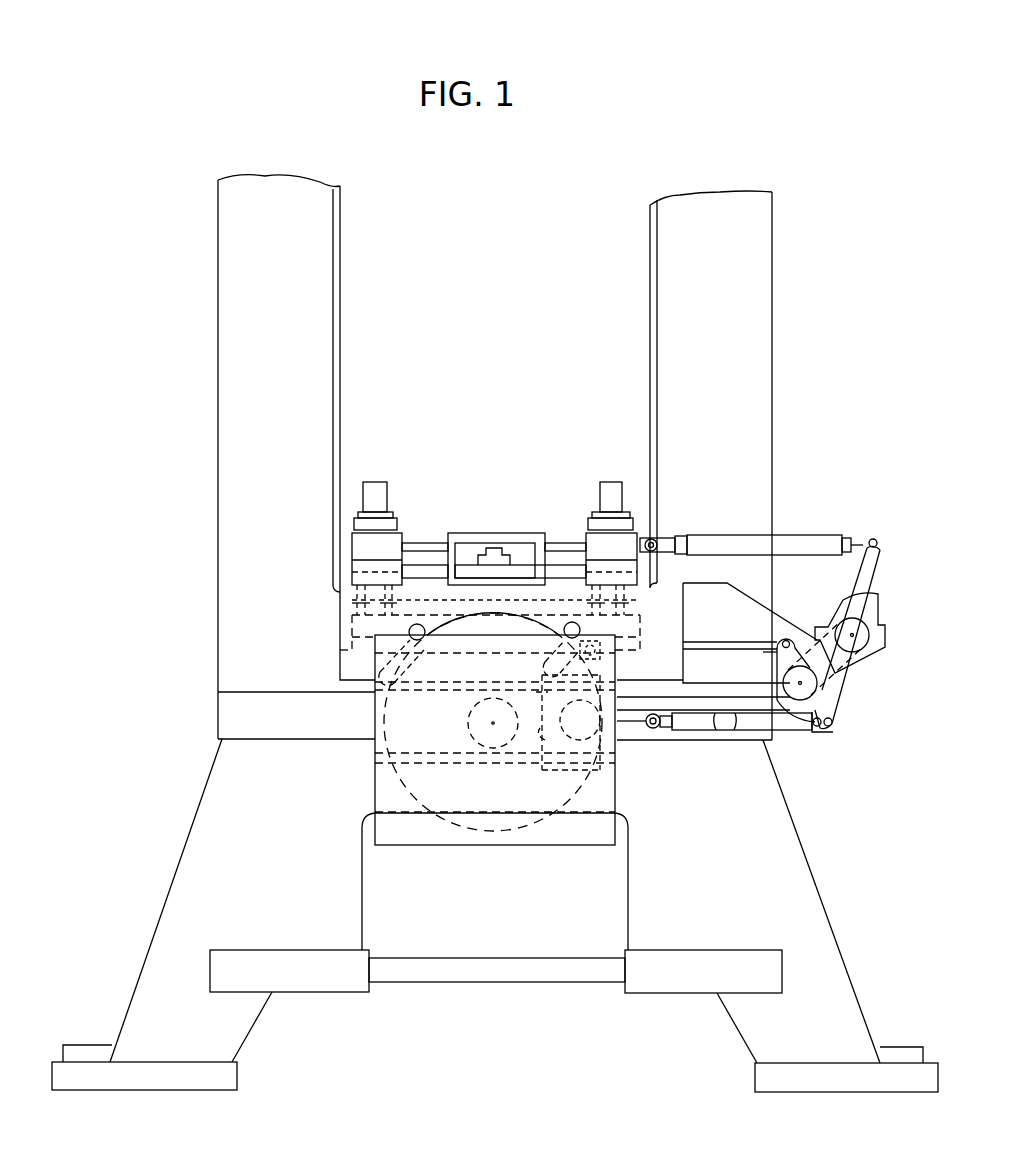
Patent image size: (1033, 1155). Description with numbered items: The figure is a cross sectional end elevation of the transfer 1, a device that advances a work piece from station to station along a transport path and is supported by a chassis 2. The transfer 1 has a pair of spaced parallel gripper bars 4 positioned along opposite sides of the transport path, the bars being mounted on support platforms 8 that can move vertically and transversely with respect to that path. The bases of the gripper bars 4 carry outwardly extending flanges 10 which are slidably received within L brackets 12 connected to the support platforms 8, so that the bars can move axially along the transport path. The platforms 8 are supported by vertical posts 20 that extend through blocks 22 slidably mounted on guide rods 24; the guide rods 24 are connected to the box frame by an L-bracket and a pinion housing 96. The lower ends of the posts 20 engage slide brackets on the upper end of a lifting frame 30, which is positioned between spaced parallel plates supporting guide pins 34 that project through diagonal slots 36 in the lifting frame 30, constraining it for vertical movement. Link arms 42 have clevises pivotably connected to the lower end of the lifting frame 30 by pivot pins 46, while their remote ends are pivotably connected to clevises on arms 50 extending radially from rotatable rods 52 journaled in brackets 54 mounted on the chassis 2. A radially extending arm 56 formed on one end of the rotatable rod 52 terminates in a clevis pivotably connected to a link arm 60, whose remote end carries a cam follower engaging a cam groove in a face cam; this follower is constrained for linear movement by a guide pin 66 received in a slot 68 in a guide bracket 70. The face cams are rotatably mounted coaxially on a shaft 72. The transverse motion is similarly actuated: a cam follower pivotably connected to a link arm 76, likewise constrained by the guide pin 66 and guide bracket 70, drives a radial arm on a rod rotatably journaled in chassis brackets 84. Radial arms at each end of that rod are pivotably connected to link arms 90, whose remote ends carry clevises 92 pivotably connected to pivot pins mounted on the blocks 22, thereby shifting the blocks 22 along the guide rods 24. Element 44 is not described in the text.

The transfer 1 is at (402, 437).
The chassis 2 is at (240, 632).
The gripper bars 4 is at (377, 497).
The support platforms 8 is at (360, 522).
The flanges 10 is at (598, 516).
The L brackets 12 is at (641, 517).
The vertical posts 20 is at (358, 596).
The blocks 22 is at (368, 545).
The guide rods 24 is at (428, 548).
The lifting frame 30 is at (358, 633).
The guide pins 34 is at (410, 628).
The diagonal slots 36 is at (383, 657).
The link arms 42 is at (702, 652).
The pivot 44 is at (588, 655).
The pivot pins 46 is at (572, 655).
The arms 50 is at (788, 660).
The rotatable rods 52 is at (803, 675).
The brackets 54 is at (796, 722).
The radially extending arm 56 is at (832, 700).
The link arm 60 is at (687, 720).
The guide pin 66 is at (584, 722).
The slot 68 is at (552, 727).
The guide bracket 70 is at (587, 747).
The shaft 72 is at (487, 723).
The link arm 76 is at (735, 723).
The chassis brackets 84 is at (843, 600).
The link arms 90 is at (804, 544).
The clevises 92 is at (666, 543).
The pinion housing 96 is at (530, 545).